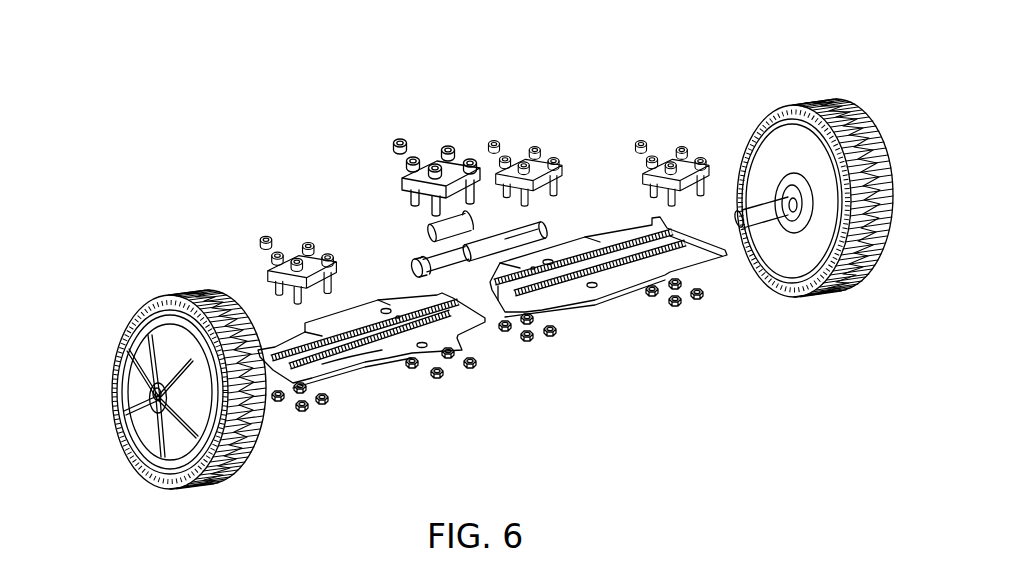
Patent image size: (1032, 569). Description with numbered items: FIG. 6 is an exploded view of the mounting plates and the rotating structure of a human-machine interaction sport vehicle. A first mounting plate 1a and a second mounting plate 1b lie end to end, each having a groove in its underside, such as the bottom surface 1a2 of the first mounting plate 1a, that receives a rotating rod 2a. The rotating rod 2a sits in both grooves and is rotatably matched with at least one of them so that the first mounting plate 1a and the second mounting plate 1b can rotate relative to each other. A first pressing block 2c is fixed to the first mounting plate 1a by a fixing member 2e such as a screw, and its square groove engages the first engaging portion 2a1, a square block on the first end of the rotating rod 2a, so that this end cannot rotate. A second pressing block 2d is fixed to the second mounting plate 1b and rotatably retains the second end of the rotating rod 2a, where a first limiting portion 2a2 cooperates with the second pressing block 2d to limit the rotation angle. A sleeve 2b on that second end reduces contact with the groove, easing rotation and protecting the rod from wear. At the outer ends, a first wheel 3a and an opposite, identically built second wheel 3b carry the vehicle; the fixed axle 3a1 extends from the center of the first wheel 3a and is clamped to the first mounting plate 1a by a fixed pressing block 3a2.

The first mounting plate 1a is at (608, 270).
The bottom surface 1a2 is at (592, 244).
The second mounting plate 1b is at (300, 392).
The rotating rod 2a is at (446, 292).
The first engaging portion 2a1 is at (537, 230).
The first limiting portion 2a2 is at (425, 262).
The sleeve 2b is at (442, 228).
The first pressing block 2c is at (556, 160).
The second pressing block 2d is at (436, 170).
The fixing member 2e is at (437, 378).
The first wheel 3a is at (798, 100).
The fixed axle 3a1 is at (773, 218).
The fixed pressing block 3a2 is at (670, 148).
The second wheel 3b is at (158, 291).